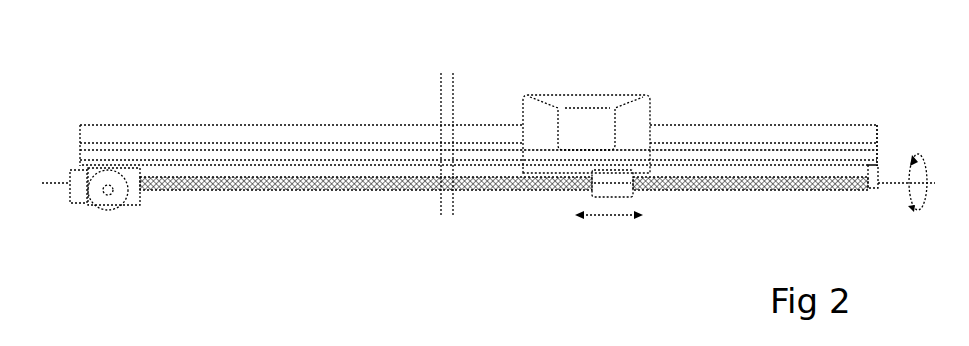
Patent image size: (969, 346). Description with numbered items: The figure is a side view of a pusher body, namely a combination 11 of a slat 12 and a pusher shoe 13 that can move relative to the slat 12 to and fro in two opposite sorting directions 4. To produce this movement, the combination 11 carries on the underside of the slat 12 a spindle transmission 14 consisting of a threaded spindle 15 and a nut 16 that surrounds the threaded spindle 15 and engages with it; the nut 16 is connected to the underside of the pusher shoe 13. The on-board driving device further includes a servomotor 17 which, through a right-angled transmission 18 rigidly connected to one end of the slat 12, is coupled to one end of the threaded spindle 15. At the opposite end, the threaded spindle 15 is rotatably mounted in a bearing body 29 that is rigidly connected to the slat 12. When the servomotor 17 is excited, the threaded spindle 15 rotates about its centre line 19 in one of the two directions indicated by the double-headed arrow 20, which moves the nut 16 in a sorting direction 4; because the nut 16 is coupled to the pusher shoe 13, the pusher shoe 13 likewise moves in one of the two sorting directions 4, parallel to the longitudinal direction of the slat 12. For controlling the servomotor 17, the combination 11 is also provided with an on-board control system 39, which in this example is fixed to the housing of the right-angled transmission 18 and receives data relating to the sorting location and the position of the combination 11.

The combination 11 is at (795, 86).
The slat 12 is at (230, 138).
The pusher shoe 13 is at (637, 116).
The spindle transmission 14 is at (513, 211).
The threaded spindle 15 is at (297, 190).
The nut 16 is at (625, 192).
The servomotor 17 is at (113, 205).
The right-angled transmission 18 is at (135, 200).
The centre line 19 is at (895, 182).
The double-headed arrow 20 is at (927, 195).
The bearing body 29 is at (873, 192).
The on-board control system 39 is at (80, 195).
The sorting directions 4 is at (617, 215).